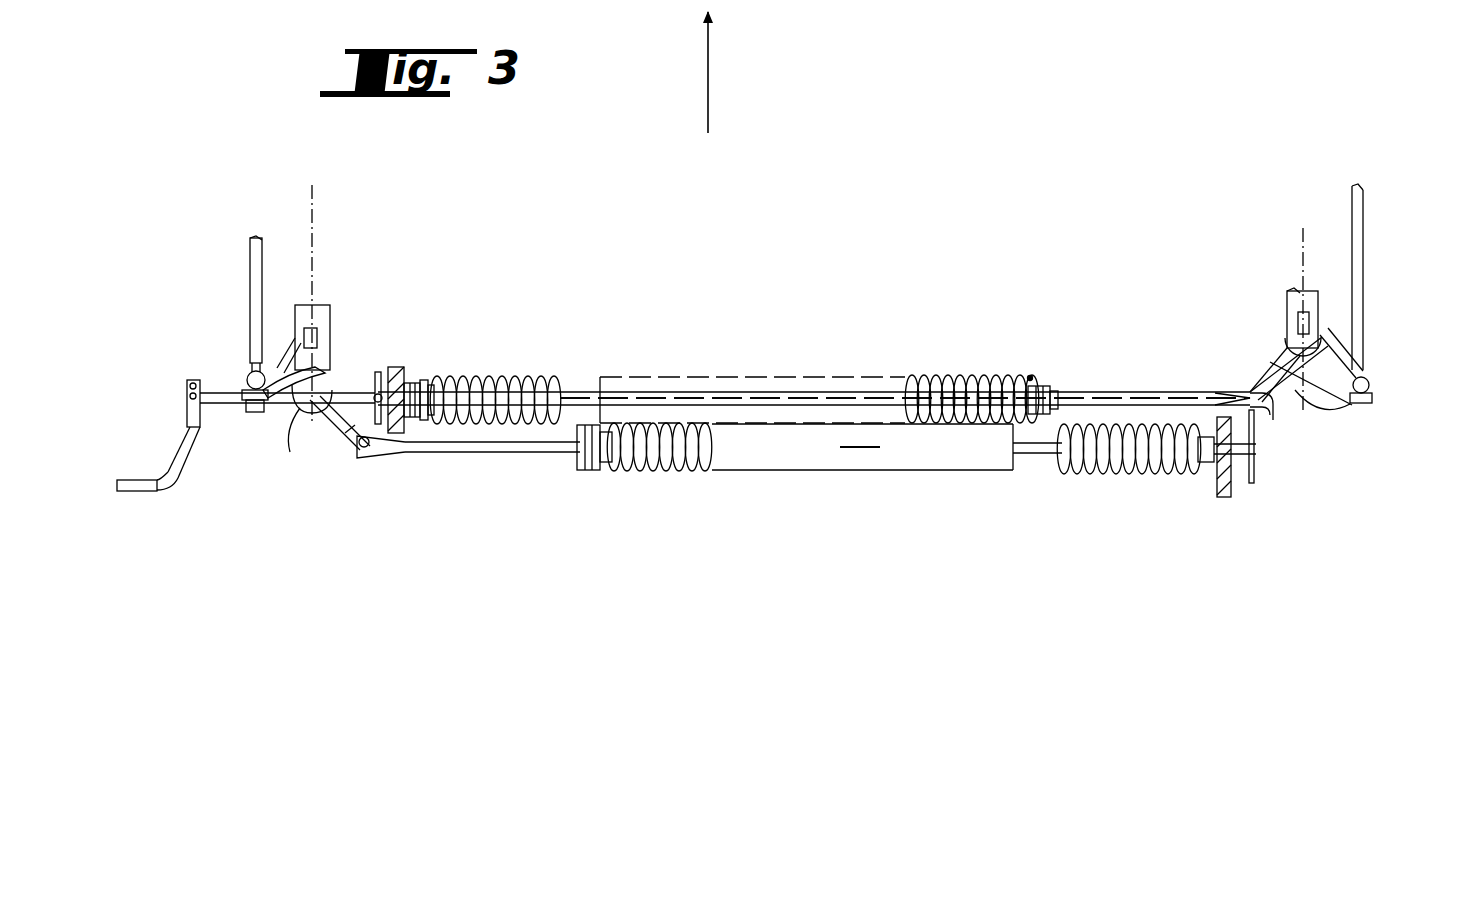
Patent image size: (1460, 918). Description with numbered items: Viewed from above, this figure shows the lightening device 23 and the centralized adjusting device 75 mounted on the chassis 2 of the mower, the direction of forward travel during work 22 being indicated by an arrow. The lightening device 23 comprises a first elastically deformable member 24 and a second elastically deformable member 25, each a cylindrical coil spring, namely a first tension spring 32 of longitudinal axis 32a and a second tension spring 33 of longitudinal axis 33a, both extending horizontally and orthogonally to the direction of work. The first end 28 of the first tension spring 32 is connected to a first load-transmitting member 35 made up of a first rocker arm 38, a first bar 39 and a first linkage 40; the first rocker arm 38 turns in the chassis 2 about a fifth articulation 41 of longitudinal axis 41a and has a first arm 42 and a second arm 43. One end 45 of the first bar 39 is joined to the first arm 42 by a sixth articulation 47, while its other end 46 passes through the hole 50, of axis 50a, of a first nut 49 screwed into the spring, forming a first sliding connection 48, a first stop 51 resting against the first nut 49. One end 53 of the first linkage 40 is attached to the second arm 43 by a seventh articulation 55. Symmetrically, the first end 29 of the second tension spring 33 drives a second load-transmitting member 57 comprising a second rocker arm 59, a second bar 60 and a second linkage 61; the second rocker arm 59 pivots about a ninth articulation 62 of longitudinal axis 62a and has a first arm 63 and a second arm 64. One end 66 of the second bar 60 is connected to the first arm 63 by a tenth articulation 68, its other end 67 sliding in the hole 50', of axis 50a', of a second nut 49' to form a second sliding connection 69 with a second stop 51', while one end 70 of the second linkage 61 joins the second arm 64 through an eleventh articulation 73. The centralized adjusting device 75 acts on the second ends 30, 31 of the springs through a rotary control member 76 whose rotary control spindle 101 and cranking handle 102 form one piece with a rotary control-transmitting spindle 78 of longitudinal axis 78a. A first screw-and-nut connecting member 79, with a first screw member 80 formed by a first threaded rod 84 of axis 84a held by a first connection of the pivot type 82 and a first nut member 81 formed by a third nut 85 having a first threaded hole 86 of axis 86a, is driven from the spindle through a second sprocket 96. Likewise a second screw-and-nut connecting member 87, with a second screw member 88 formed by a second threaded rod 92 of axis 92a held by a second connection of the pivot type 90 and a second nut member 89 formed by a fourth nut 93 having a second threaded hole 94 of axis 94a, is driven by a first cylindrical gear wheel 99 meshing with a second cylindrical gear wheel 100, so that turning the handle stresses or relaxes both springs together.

The chassis 2 is at (398, 372).
The direction of forward travel during work 22 is at (708, 63).
The lightening device 23 is at (548, 380).
The first elastically deformable member 24 is at (517, 378).
The second elastically deformable member 25 is at (672, 475).
The first end of the first elastically deformable member 28 is at (1048, 388).
The first end of the second elastically deformable member 29 is at (574, 462).
The second end of the first elastically deformable member 30 is at (426, 385).
The second end of the second elastically deformable member 31 is at (1196, 468).
The first tension spring 32 is at (930, 385).
The longitudinal axis of the first tension spring 32a is at (794, 402).
The longitudinal axis of the hole of the first nut 50a is at (905, 298).
The longitudinal axis of the rotary control-transmitting spindle 78a is at (905, 298).
The axis of rod 84a is at (905, 298).
The longitudinal axis of the first threaded hole 86a is at (905, 298).
The second tension spring 33 is at (1082, 462).
The longitudinal axis of the second tension spring 33a is at (862, 448).
The longitudinal axis of the hole of the second nut 50a' is at (831, 519).
The axis of spring 92a is at (878, 519).
The longitudinal axis of the second threaded hole 94a is at (902, 519).
The first load-transmitting member 35 is at (1285, 400).
The first rocker arm 38 is at (1312, 388).
The first bar 39 is at (1120, 402).
The first linkage 40 is at (1363, 265).
The fifth articulation 41 is at (1300, 320).
The longitudinal axis of the fifth articulation 41a is at (1303, 242).
The first arm of the first rocker arm 42 is at (1274, 368).
The second arm of the first rocker arm 43 is at (1340, 352).
The end of the first bar 45 is at (1244, 392).
The other end of the first bar 46 is at (1060, 400).
The sixth articulation 47 is at (1273, 420).
The first sliding connection 48 is at (1030, 378).
The first nut 49 is at (1102, 328).
The second nut 49' is at (498, 526).
The hole of the first nut 50 is at (993, 329).
The hole of the second nut 50' is at (560, 528).
The first stop 51 is at (966, 340).
The second stop 51' is at (630, 530).
The end of the first linkage 53 is at (1378, 366).
The seventh articulation 55 is at (1370, 398).
The second load-transmitting member 57 is at (332, 422).
The second rocker arm 59 is at (298, 414).
The second bar 60 is at (472, 445).
The second linkage 61 is at (255, 258).
The ninth articulation 62 is at (300, 330).
The longitudinal axis of the ninth articulation 62a is at (315, 222).
The first arm of the second rocker arm 63 is at (346, 440).
The second arm of the second rocker arm 64 is at (283, 368).
The end of the second bar 66 is at (388, 458).
The other end of the second bar 67 is at (548, 452).
The tenth articulation 68 is at (370, 458).
The second sliding connection 69 is at (603, 470).
The end of the second linkage 70 is at (250, 377).
The eleventh articulation 73 is at (256, 418).
The centralized adjusting device 75 is at (124, 495).
The rotary control member 76 is at (214, 408).
The rotary control-transmitting spindle 78 is at (683, 388).
The first screw-and-nut connecting member 79 is at (440, 388).
The first screw member 80 is at (606, 388).
The first nut member 81 is at (455, 388).
The first connection of the pivot type 82 is at (397, 382).
The first threaded rod 84 is at (650, 388).
The third nut 85 is at (412, 385).
The first threaded hole 86 is at (490, 380).
The second screw-and-nut connecting member 87 is at (1160, 468).
The second screw member 88 is at (1025, 450).
The second nut member 89 is at (1178, 475).
The second connection of the pivot type 90 is at (1232, 462).
The second threaded rod 92 is at (1058, 452).
The fourth nut 93 is at (1160, 462).
The second threaded hole 94 is at (1166, 472).
The second sprocket 96 is at (372, 396).
The first cylindrical gear wheel 99 is at (1240, 395).
The second cylindrical gear wheel 100 is at (1254, 483).
The rotary control spindle 101 is at (216, 392).
The cranking handle 102 is at (178, 440).